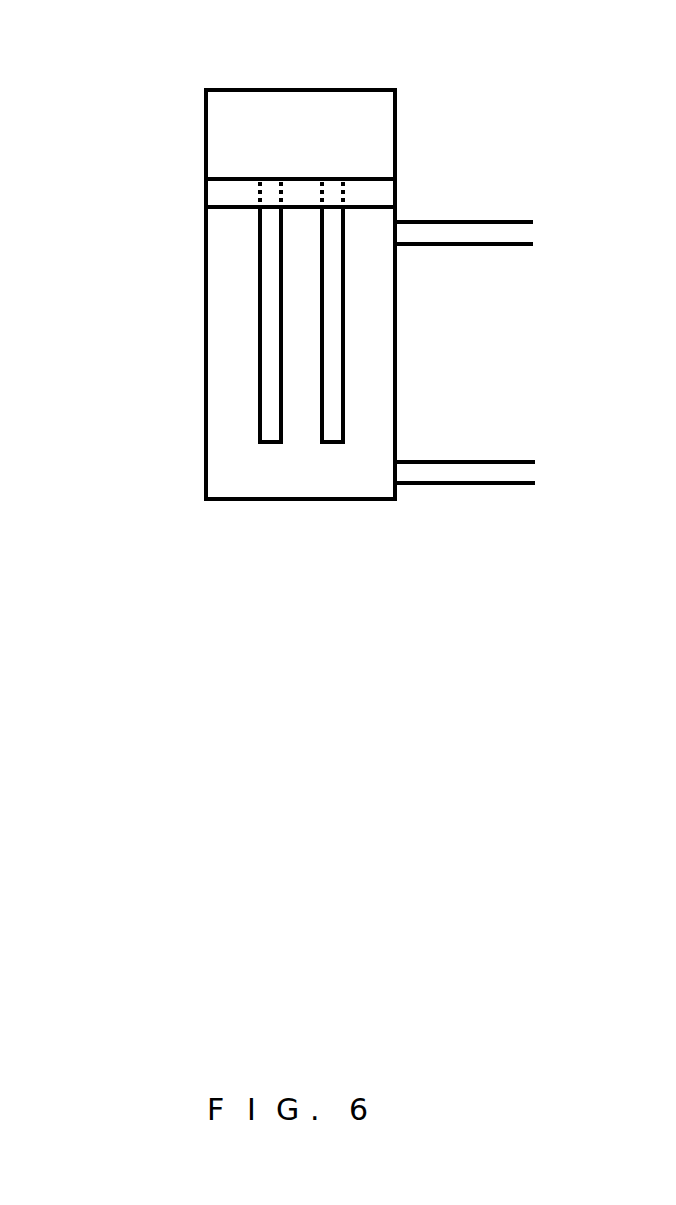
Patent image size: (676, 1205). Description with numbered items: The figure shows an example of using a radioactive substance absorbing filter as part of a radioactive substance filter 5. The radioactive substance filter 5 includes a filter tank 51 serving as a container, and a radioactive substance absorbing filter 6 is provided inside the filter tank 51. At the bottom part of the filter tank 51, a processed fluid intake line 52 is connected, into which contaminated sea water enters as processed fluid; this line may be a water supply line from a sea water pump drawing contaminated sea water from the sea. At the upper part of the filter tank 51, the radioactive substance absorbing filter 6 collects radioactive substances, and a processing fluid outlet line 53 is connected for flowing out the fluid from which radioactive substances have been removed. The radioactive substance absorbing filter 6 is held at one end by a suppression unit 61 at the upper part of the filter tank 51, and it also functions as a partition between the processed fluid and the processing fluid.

The radioactive substance filter 5 is at (184, 122).
The filter tank 51 is at (300, 88).
The processed fluid intake line 52 is at (467, 461).
The processing fluid outlet line 53 is at (467, 221).
The radioactive substance absorbing filter 6 is at (270, 320).
The suppression unit 61 is at (214, 197).